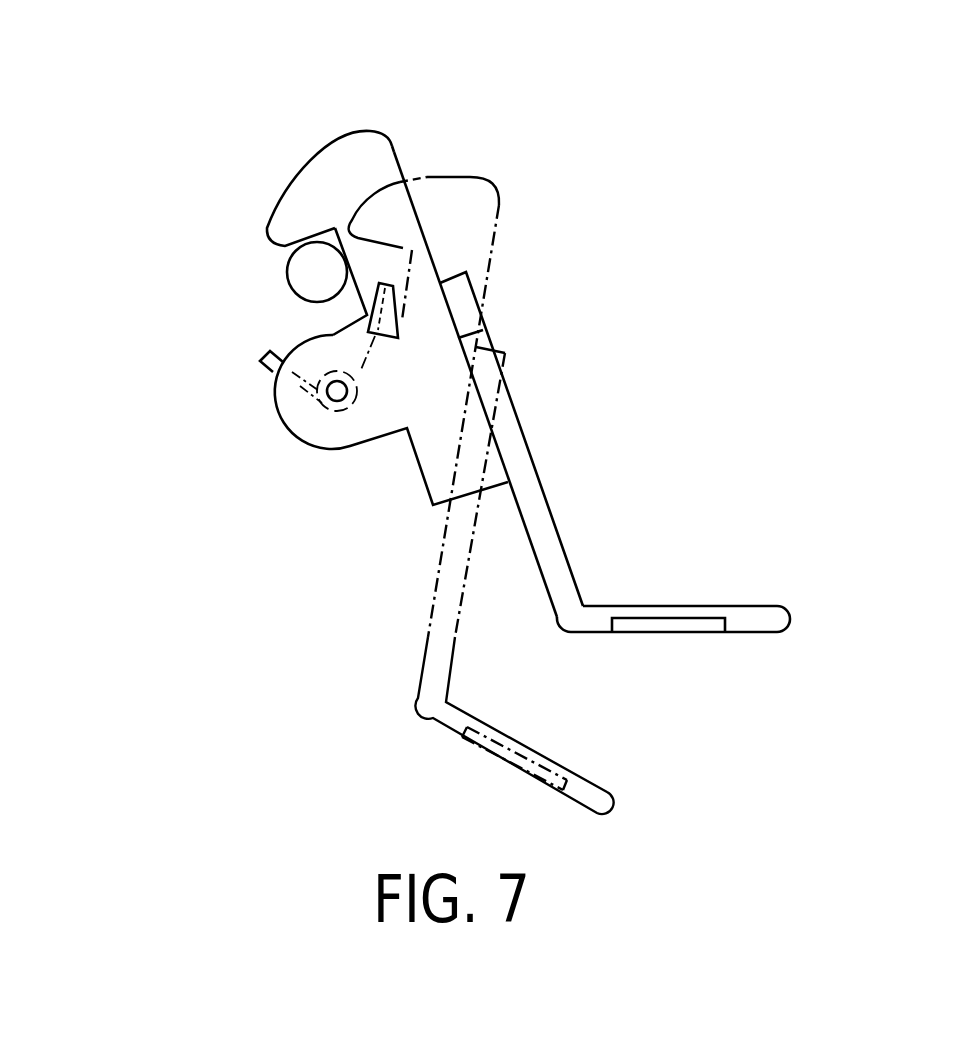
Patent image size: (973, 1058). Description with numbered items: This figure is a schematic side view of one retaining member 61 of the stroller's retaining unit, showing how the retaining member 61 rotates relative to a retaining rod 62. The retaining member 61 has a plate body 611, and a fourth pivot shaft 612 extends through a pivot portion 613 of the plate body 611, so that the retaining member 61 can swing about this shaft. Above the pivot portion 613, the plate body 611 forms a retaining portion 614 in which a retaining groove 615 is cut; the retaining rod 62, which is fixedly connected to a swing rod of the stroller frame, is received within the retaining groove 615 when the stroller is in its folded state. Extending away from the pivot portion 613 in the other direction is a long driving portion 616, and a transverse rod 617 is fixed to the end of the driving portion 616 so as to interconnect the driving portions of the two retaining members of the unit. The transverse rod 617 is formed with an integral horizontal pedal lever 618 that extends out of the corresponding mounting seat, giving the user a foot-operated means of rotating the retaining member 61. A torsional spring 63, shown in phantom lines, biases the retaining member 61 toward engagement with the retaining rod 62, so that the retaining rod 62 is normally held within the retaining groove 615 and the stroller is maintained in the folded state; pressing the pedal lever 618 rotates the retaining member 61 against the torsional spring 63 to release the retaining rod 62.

The retaining member 61 is at (503, 395).
The plate body 611 is at (318, 149).
The fourth pivot shaft 612 is at (337, 396).
The pivot portion 613 is at (321, 449).
The retaining portion 614 is at (373, 163).
The retaining groove 615 is at (325, 318).
The driving portion 616 is at (542, 525).
The transverse rod 617 is at (725, 648).
The horizontal pedal lever 618 is at (668, 623).
The retaining rod 62 is at (307, 263).
The torsional spring 63 is at (372, 353).